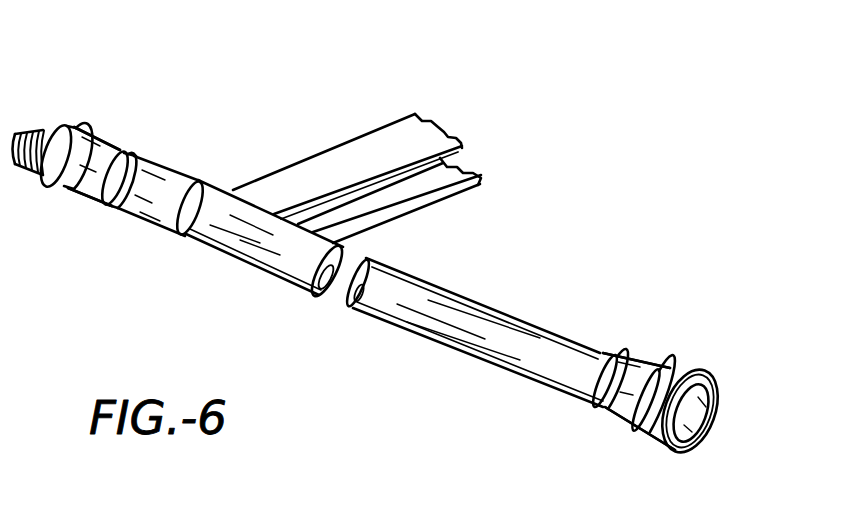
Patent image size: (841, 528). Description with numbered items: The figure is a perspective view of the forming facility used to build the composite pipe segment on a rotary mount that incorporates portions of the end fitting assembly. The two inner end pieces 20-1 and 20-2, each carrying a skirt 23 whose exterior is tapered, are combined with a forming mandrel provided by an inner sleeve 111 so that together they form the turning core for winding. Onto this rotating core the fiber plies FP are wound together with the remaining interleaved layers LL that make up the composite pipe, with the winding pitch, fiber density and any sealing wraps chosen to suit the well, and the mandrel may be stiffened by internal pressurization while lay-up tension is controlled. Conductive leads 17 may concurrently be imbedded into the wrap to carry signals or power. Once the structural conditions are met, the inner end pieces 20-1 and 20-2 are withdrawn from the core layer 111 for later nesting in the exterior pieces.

The inner end piece 20-1 is at (91, 136).
The inner end piece 20-2 is at (656, 418).
The skirt 23 is at (72, 188).
The conductive leads 17 is at (406, 178).
The fiber plies FP is at (320, 172).
The interleaved layers LL is at (377, 202).
The inner sleeve 111 is at (488, 311).